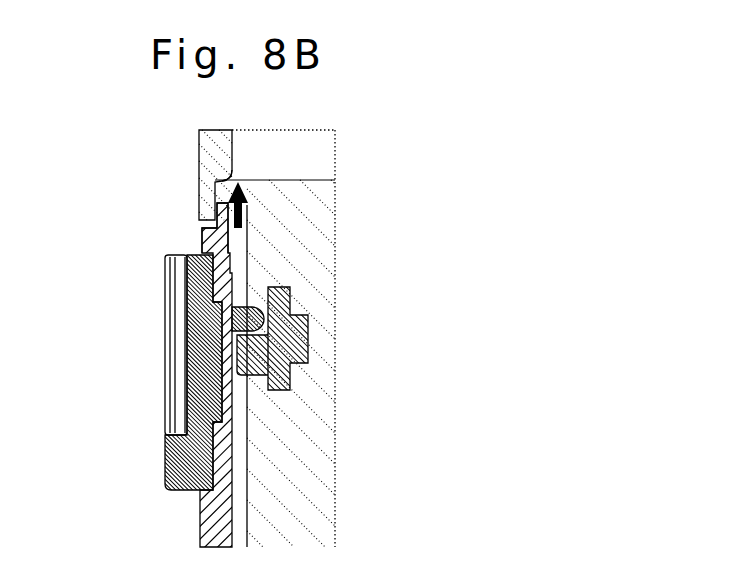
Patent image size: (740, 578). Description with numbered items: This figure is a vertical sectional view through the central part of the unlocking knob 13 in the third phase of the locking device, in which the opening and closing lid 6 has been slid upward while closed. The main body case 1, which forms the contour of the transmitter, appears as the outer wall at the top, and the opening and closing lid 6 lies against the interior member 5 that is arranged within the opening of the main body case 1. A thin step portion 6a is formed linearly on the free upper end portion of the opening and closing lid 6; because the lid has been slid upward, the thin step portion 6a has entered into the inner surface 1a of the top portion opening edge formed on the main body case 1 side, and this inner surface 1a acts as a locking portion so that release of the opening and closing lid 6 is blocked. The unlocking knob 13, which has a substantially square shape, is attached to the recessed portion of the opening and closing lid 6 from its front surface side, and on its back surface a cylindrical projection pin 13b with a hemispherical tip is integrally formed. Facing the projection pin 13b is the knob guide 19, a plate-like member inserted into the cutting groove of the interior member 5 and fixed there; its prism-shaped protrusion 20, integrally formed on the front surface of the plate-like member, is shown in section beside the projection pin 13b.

The main body case 1 is at (198, 162).
The inner surface of top portion opening edge 1a is at (222, 185).
The interior member 5 is at (336, 497).
The opening and closing lid 6 is at (200, 533).
The thin step portion 6a is at (198, 221).
The unlocking knob 13 is at (188, 377).
The cylindrical projection pin 13b is at (237, 306).
The knob guide 19 is at (290, 297).
The prism-shaped protrusion 20 is at (246, 372).